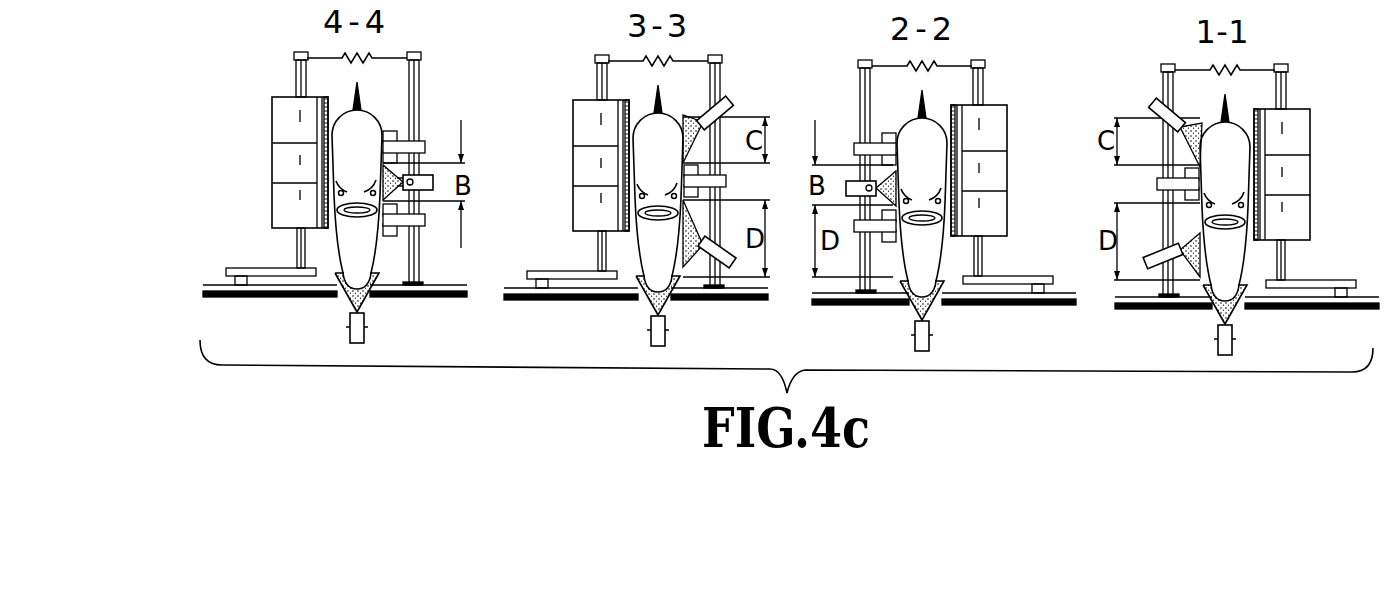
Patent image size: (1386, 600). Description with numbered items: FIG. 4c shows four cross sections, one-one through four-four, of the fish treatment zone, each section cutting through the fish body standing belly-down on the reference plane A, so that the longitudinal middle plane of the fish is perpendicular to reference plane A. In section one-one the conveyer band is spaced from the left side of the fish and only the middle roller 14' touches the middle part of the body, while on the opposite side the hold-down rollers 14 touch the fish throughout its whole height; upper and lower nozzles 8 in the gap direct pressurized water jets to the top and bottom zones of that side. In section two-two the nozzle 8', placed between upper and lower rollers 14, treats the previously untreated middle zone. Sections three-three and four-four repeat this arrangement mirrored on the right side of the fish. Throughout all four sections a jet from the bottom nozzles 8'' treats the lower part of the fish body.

The distance-type rollers 14 is at (808, 161).
The middle roller 14' is at (1142, 184).
The nozzles 8 is at (942, 165).
The nozzle 8' is at (639, 157).
The nozzles 8'' is at (773, 340).
The reference plane A is at (1232, 278).